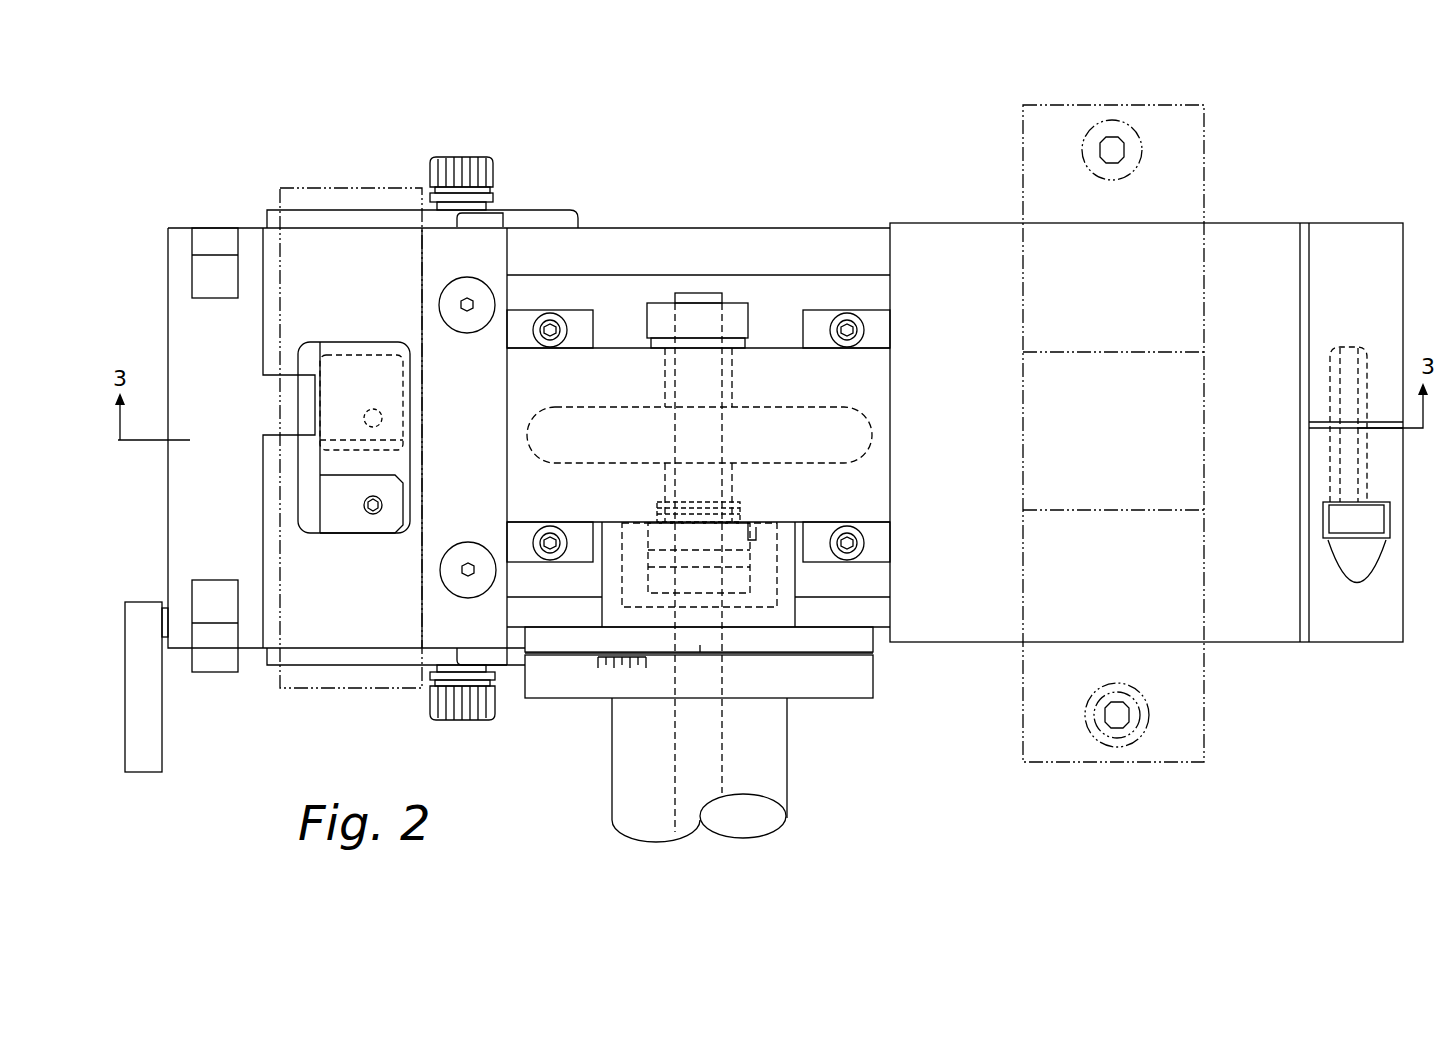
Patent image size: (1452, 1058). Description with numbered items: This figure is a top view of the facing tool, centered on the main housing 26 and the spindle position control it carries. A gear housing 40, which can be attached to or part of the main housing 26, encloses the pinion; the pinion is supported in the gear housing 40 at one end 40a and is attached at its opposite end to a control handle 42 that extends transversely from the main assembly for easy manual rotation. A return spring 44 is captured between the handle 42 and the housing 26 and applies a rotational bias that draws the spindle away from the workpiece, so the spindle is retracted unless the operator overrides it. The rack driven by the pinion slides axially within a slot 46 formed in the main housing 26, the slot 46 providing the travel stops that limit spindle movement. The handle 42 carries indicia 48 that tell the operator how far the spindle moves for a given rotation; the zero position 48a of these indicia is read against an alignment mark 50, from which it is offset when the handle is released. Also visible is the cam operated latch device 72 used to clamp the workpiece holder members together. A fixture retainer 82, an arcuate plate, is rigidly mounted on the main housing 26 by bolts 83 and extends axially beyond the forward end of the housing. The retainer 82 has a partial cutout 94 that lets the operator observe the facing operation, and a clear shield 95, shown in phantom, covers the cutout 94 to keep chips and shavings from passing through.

The main housing 26 is at (967, 220).
The gear housing 40 is at (890, 445).
The one end of the gear housing 40a is at (768, 306).
The control handle 42 is at (769, 757).
The return spring 44 is at (740, 500).
The slot 46 is at (818, 420).
The indicia 48 is at (589, 712).
The zero position 48a is at (654, 712).
The alignment mark 50 is at (724, 638).
The cam operated latch device 72 is at (199, 716).
The fixture retainer 82 is at (492, 253).
The bolts 83 is at (470, 322).
The partial cutout 94 is at (374, 397).
The clear shield 95 is at (330, 188).